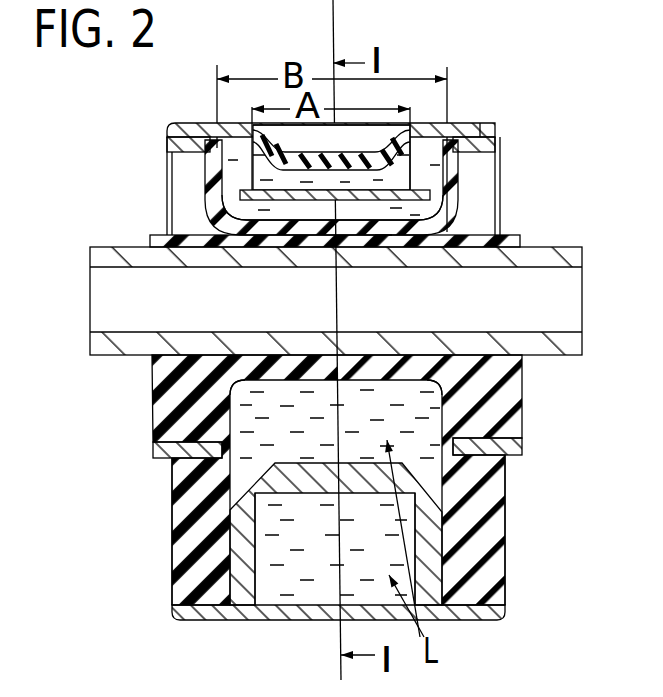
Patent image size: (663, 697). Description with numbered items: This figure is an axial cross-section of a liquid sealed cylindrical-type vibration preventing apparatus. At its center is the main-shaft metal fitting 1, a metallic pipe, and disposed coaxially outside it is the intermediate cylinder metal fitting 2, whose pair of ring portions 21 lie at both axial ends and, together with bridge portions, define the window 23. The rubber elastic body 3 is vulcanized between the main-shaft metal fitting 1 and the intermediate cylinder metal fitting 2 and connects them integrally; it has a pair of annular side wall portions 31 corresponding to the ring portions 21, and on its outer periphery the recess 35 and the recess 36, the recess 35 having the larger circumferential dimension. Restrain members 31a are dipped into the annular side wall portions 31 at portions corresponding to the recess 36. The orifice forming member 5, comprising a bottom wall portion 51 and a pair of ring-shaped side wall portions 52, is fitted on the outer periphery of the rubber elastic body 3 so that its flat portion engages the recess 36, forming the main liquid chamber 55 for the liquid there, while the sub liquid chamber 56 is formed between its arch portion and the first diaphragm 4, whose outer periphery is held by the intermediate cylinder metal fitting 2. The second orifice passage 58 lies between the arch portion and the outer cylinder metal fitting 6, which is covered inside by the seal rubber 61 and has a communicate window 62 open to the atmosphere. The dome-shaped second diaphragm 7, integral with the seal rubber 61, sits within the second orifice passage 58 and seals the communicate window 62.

The main-shaft metal fitting 1 is at (517, 258).
The intermediate cylinder metal fitting 2 is at (510, 597).
The rubber elastic body 3 is at (514, 410).
The first diaphragm 4 is at (277, 237).
The orifice forming member 5 is at (447, 173).
The outer cylinder metal fitting 6 is at (462, 124).
The second diaphragm 7 is at (452, 196).
The ring portions 21 is at (180, 147).
The window 23 is at (233, 127).
The annular side wall portions 31 is at (193, 503).
The restrain members 31a is at (153, 448).
The recess 35 is at (383, 237).
The recess 36 is at (452, 386).
The bottom wall portion 51 is at (247, 522).
The side wall portions 52 is at (238, 570).
The main liquid chamber 55 is at (300, 393).
The sub liquid chamber 56 is at (217, 202).
The second orifice passage 58 is at (217, 160).
The seal rubber 61 is at (488, 123).
The communicate window 62 is at (380, 123).